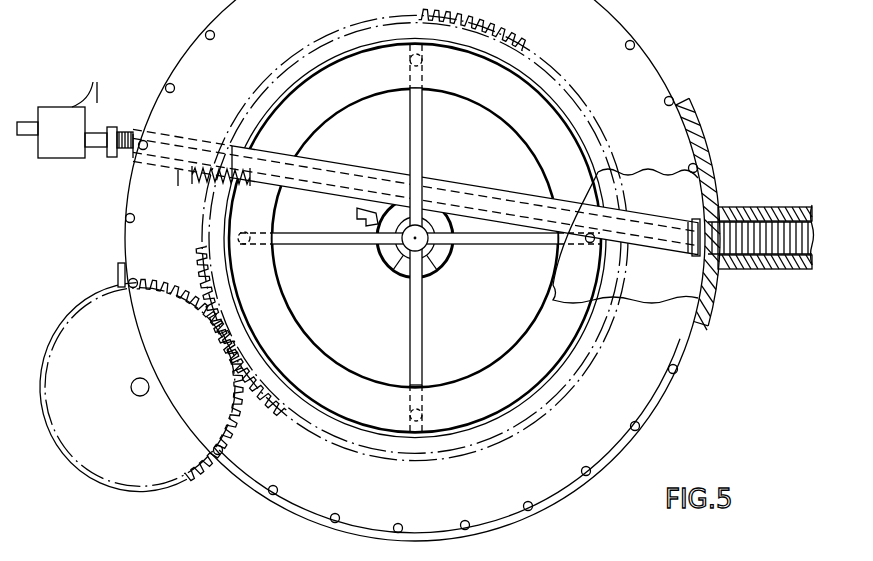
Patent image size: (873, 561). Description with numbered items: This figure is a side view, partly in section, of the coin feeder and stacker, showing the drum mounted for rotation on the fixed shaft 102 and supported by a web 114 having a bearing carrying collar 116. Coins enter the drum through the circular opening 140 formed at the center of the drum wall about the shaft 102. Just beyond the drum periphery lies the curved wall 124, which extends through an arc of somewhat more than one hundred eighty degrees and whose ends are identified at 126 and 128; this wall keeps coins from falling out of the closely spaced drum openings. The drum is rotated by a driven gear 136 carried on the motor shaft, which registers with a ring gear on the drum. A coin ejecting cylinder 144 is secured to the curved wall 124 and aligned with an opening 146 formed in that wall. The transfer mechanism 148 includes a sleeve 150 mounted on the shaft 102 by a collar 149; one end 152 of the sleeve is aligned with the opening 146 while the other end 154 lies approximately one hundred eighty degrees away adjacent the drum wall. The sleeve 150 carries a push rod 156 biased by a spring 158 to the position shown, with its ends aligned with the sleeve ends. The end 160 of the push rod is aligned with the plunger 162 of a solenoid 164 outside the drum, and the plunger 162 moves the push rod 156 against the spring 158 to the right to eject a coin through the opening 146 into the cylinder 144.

The fixed shaft 102 is at (400, 257).
The web 114 is at (413, 132).
The bearing carrying collar 116 is at (433, 254).
The curved wall 124 is at (698, 138).
The end of arcuate wall 126 is at (118, 266).
The end of arcuate wall 128 is at (712, 181).
The driven gear 136 is at (172, 458).
The circular opening 140 is at (327, 358).
The coin ejecting cylinder 144 is at (797, 208).
The opening 146 is at (713, 228).
The mechanism 148 is at (656, 202).
The collar 149 is at (357, 210).
The sleeve 150 is at (656, 248).
The end of sleeve 152 is at (690, 256).
The other end of sleeve 154 is at (178, 136).
The push rod 156 is at (511, 193).
The spring 158 is at (235, 189).
The end of push rod 160 is at (172, 180).
The plunger 162 is at (136, 130).
The solenoid 164 is at (52, 107).